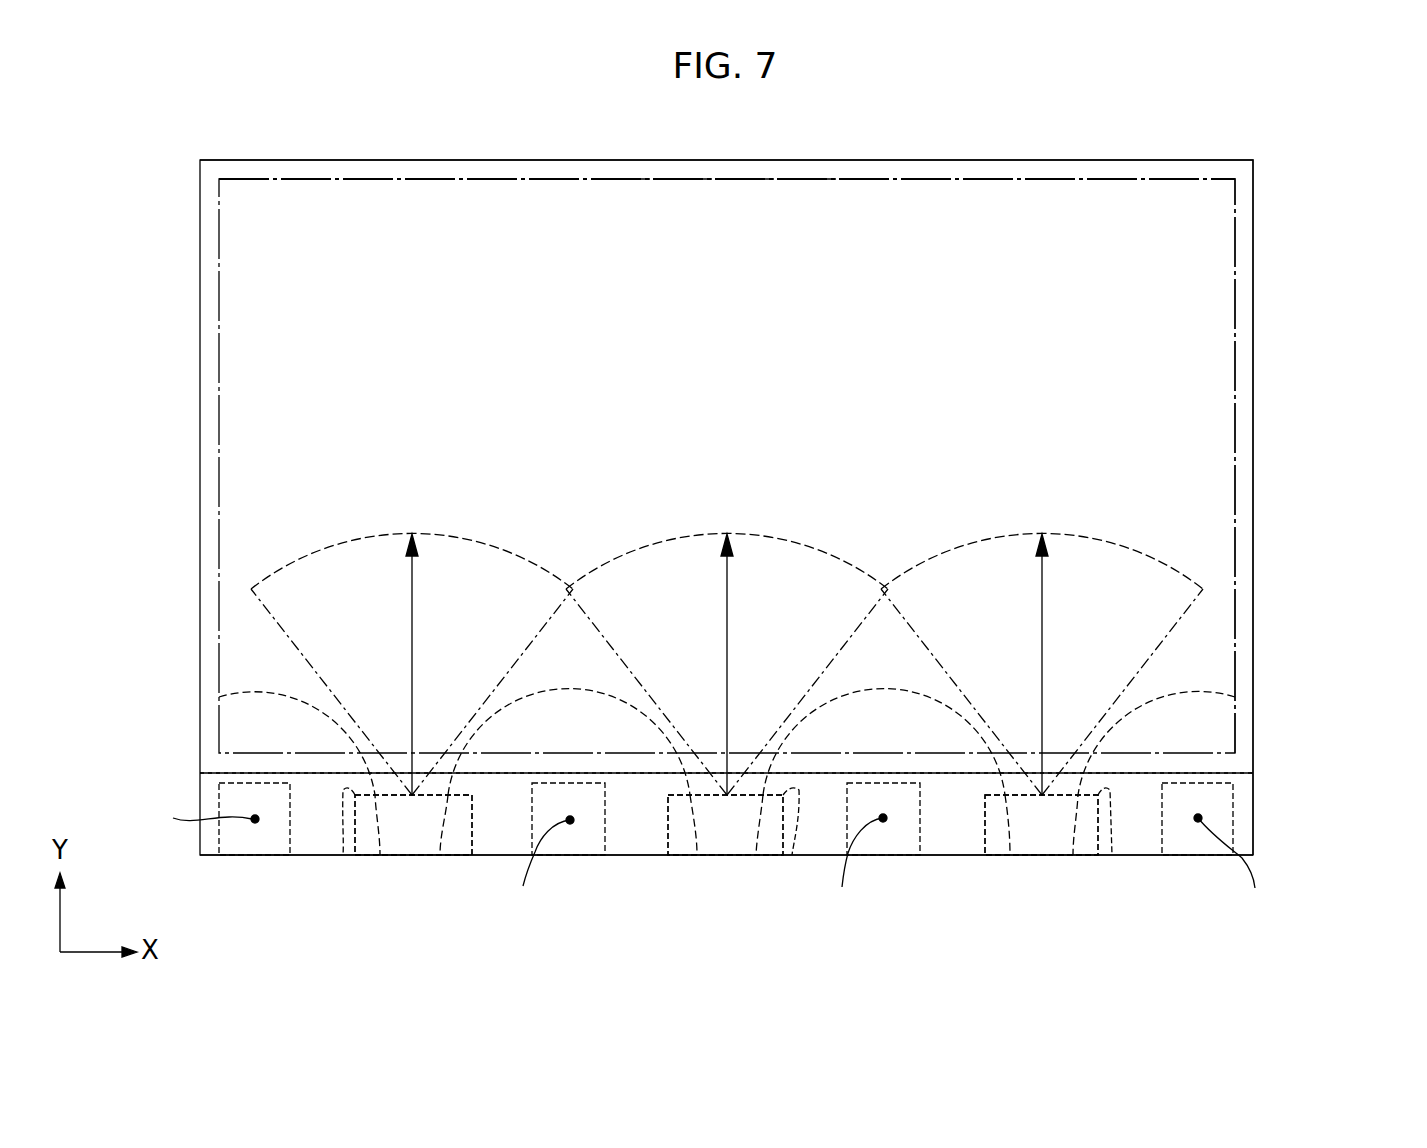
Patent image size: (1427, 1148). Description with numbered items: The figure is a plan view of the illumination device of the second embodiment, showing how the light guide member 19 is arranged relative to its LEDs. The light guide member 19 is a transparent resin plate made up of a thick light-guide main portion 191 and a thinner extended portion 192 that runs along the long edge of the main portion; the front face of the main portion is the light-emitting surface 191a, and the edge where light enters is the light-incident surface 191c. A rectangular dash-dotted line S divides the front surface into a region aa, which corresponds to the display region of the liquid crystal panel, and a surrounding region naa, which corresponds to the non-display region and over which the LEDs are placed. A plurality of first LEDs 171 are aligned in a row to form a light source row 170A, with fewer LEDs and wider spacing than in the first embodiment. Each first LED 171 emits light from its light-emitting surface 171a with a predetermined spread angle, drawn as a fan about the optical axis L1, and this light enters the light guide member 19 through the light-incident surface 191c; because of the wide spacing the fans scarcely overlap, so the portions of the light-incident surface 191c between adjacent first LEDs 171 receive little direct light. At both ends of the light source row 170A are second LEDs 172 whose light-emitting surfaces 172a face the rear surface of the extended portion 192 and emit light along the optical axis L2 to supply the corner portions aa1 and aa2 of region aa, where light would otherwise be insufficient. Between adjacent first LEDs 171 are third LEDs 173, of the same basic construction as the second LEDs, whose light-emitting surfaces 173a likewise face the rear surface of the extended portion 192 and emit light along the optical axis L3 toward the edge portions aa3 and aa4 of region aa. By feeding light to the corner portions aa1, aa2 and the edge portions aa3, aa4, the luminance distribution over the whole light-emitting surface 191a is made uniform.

The light guide member 19 is at (1163, 160).
The light-guide main portion 191 is at (1254, 378).
The light-emitting surface 191a is at (1200, 317).
The extended portion 192 is at (1254, 832).
The light-incident surface 191c is at (655, 773).
The dash-dotted line S is at (478, 178).
The region corresponding to the non-display region naa is at (727, 170).
The region corresponding to the display region aa is at (875, 205).
The corner portion aa1 is at (1218, 740).
The corner portion aa2 is at (228, 742).
The edge portion aa3 is at (912, 722).
The edge portion aa4 is at (578, 722).
The optical axis of light emitted from the first LEDs L1 is at (410, 580).
The optical axis of light emitted from the second LEDs L2 is at (704, 861).
The optical axis of light emitted from the third LEDs L3 is at (686, 869).
The first LED 171 is at (1045, 890).
The light source row 170A is at (726, 872).
The light-emitting surface 171a is at (1112, 925).
The second LED 172 is at (1200, 890).
The light-emitting surface 172a is at (1152, 890).
The third LED 173 is at (912, 888).
The light-emitting surface 173a is at (543, 840).